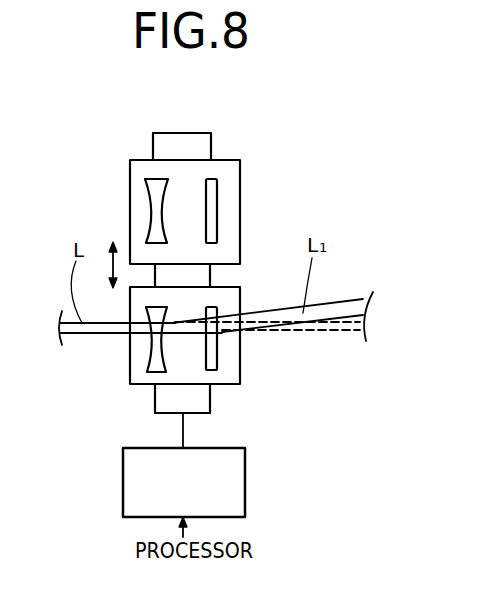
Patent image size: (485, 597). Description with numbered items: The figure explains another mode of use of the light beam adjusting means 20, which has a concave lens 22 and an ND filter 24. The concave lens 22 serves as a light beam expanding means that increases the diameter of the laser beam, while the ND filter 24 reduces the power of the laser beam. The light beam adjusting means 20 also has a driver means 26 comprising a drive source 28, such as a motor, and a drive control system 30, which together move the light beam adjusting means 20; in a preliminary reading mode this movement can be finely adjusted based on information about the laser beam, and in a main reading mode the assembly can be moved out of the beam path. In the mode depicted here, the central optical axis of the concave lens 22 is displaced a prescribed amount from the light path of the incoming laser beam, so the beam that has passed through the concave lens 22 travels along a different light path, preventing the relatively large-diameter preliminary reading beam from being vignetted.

The light beam adjusting means 20 is at (258, 183).
The concave lens 22 is at (147, 358).
The ND filter 24 is at (215, 363).
The driver means 26 is at (92, 443).
The drive source 28 is at (202, 398).
The drive control system 30 is at (245, 500).